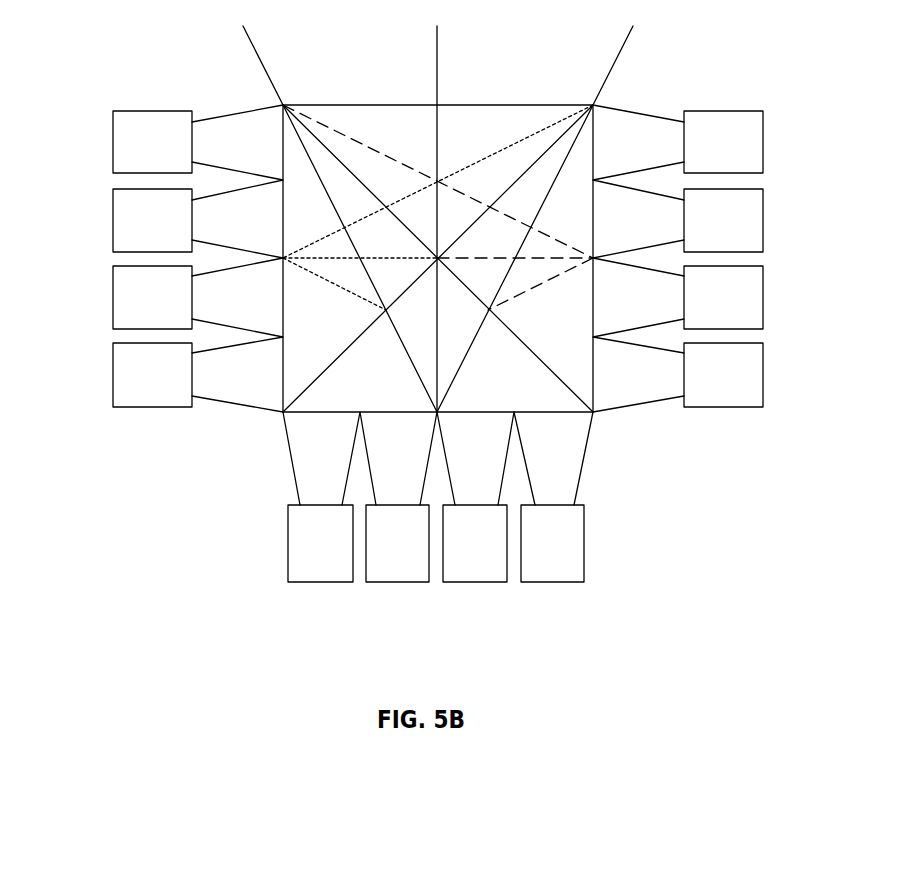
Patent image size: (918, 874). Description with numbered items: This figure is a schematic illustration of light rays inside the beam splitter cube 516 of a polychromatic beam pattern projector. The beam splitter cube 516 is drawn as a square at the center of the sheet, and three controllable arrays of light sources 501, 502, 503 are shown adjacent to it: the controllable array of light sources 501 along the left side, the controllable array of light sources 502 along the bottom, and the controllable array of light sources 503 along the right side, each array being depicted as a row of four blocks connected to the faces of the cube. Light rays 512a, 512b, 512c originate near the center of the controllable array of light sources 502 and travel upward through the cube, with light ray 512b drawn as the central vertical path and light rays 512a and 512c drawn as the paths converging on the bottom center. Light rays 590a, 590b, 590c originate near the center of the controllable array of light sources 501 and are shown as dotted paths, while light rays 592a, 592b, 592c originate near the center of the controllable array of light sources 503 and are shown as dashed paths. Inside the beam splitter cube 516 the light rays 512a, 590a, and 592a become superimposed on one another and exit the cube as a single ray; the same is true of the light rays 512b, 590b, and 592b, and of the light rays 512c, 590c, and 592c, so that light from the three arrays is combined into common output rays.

The controllable array of light sources 501 is at (103, 276).
The controllable array of light sources 502 is at (247, 510).
The controllable array of light sources 503 is at (777, 278).
The light ray 512a is at (415, 370).
The light ray 512b is at (438, 388).
The light ray 512c is at (461, 370).
The beam splitter cube 516 is at (594, 405).
The light ray 590a is at (322, 225).
The light ray 590b is at (301, 258).
The light ray 590c is at (340, 290).
The light ray 592a is at (554, 225).
The light ray 592b is at (575, 258).
The light ray 592c is at (536, 290).